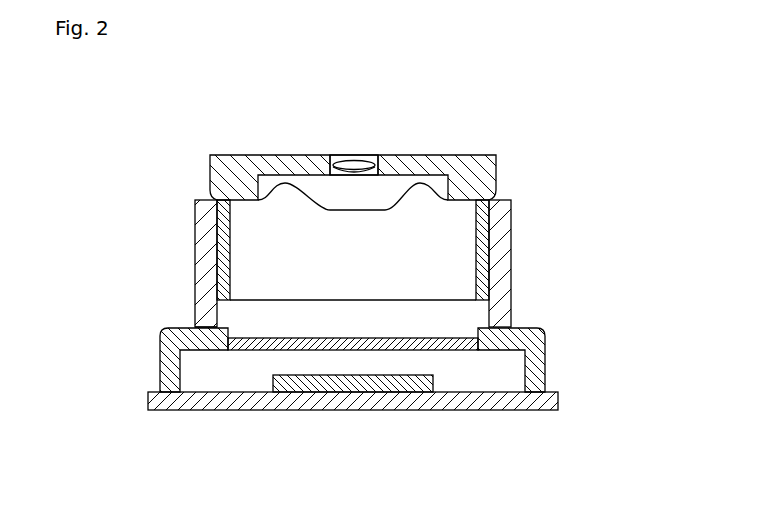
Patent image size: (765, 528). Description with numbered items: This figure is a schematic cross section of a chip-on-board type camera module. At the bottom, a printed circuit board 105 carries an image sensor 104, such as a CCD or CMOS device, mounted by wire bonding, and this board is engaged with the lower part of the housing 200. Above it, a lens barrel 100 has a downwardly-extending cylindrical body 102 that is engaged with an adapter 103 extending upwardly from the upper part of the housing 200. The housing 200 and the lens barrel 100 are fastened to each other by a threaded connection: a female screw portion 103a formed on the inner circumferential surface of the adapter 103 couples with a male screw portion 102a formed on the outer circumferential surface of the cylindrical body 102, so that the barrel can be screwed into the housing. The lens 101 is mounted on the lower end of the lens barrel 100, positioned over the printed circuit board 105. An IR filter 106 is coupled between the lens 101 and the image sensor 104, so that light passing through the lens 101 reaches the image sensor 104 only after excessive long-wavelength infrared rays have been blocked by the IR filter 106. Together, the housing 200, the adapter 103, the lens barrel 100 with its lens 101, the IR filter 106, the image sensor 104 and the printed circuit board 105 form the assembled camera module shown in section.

The lens barrel 100 is at (497, 170).
The lens 101 is at (350, 155).
The cylindrical body 102 is at (195, 228).
The male screw portion 102a is at (512, 272).
The adapter 103 is at (196, 264).
The female screw portion 103a is at (196, 322).
The image sensor 104 is at (347, 412).
The printed circuit board 105 is at (237, 413).
The IR filter 106 is at (472, 352).
The housing 200 is at (546, 360).